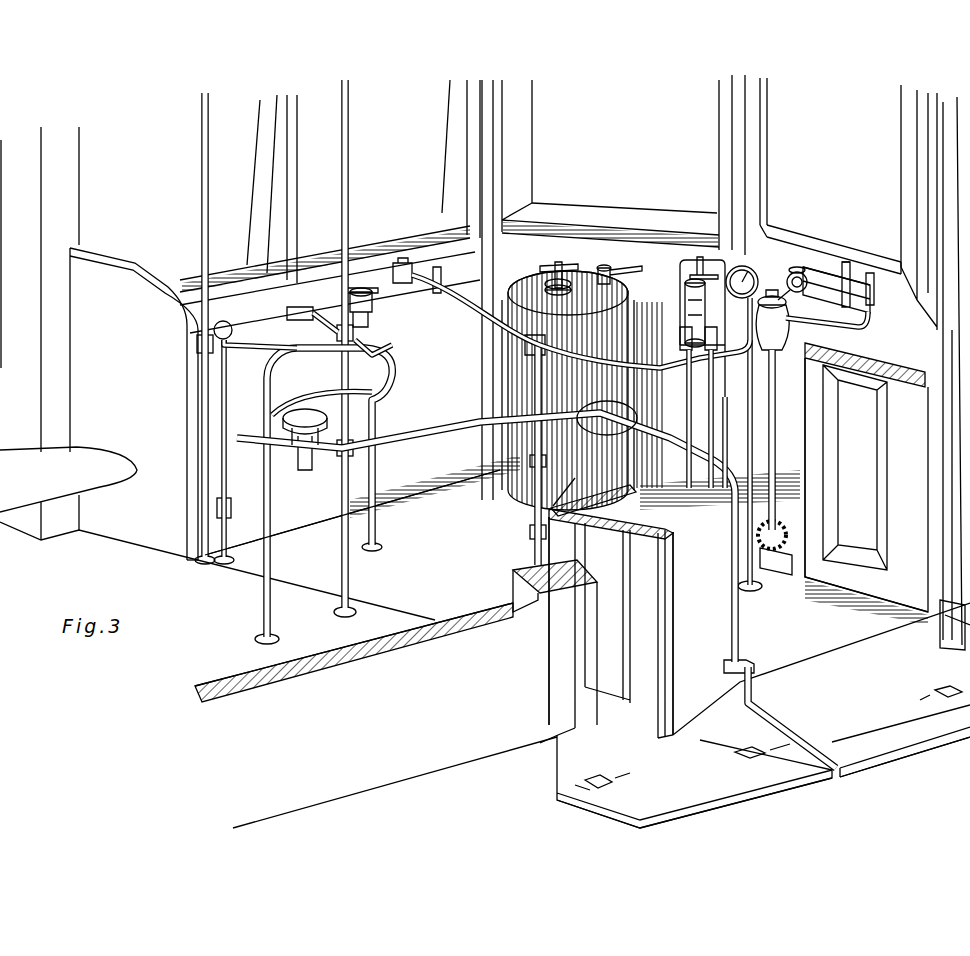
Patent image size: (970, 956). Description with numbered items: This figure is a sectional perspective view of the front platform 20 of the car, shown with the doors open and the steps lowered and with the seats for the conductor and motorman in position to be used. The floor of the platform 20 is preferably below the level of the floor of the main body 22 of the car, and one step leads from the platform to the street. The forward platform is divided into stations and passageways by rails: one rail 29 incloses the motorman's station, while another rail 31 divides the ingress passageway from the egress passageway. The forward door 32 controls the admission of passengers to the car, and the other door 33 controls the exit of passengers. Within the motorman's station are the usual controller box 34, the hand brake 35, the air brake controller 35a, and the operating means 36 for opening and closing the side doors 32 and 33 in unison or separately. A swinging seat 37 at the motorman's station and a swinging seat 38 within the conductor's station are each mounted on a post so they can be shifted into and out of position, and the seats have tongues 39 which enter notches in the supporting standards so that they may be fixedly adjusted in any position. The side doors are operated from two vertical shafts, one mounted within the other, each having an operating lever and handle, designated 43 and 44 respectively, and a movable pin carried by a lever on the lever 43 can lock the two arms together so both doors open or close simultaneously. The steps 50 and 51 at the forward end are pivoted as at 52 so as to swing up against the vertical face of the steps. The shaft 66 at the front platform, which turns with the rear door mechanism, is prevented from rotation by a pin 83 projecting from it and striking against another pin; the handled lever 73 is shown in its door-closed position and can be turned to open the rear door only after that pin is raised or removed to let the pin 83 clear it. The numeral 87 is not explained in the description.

The front platform 20 is at (352, 523).
The main body 22 is at (354, 639).
The rail 29 is at (455, 420).
The rail 31 is at (390, 388).
The forward door 32 is at (866, 485).
The door 33 is at (632, 712).
The controller box 34 is at (585, 292).
The hand brake 35 is at (760, 340).
The air brake controller 35a is at (678, 283).
The operating means 36 is at (812, 270).
The swinging seat 37 is at (702, 407).
The swinging seat 38 is at (310, 445).
The tongues 39 is at (250, 528).
The operating lever and handle 43 is at (872, 296).
The operating lever and handle 44 is at (850, 275).
The step 50 is at (893, 737).
The step 51 is at (688, 792).
The pivot 52 is at (625, 770).
The shaft 66 is at (378, 412).
The handled lever 73 is at (413, 293).
The pin 83 is at (388, 360).
The valve 87 is at (350, 352).